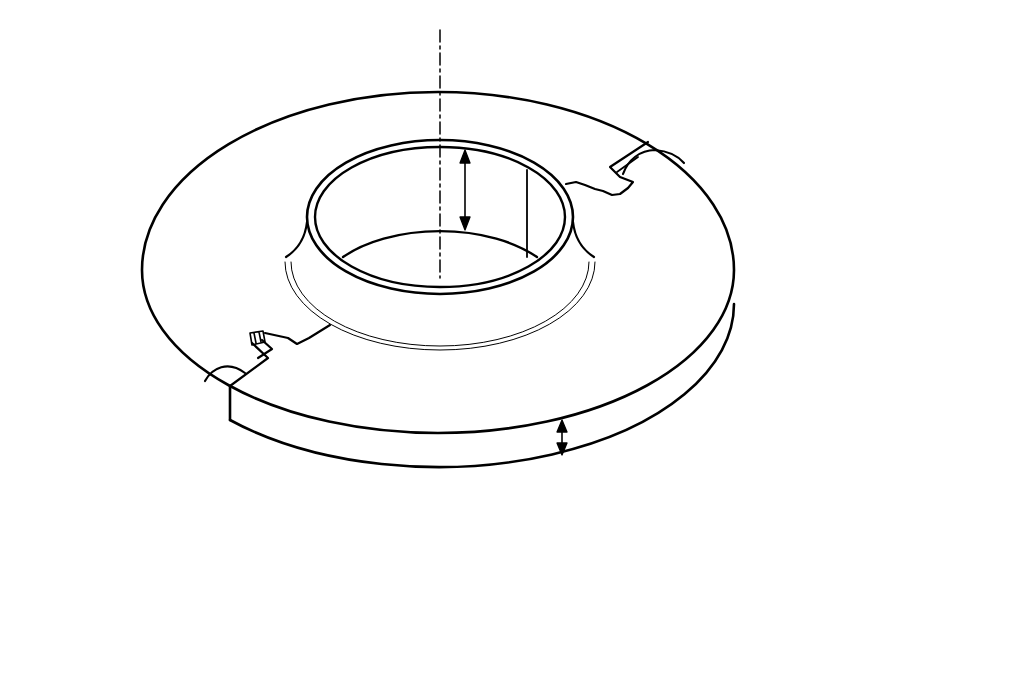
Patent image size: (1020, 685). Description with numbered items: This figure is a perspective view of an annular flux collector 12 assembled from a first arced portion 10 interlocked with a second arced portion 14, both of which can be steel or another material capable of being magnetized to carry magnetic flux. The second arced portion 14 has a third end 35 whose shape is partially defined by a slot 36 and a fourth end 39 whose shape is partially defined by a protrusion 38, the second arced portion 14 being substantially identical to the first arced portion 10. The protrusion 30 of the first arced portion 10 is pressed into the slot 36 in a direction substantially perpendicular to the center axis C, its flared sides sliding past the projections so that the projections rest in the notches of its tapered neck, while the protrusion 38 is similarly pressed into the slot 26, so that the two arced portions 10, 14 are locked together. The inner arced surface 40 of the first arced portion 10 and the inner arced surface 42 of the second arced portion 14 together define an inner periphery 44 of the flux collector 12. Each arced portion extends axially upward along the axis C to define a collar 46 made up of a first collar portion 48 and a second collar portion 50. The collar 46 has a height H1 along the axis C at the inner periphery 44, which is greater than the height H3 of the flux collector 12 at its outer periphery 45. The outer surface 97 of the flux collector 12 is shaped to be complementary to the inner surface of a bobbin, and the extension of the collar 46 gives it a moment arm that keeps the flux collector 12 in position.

The first arced portion 10 is at (268, 143).
The annular flux collector 12 is at (665, 72).
The second arced portion 14 is at (693, 237).
The slot 26 is at (256, 334).
The protrusion 30 is at (606, 184).
The third end 35 is at (627, 170).
The slot 36 is at (660, 157).
The protrusion 38 is at (257, 343).
The fourth end 39 is at (205, 381).
The inner arced surface 40 is at (380, 210).
The inner arced surface 42 is at (551, 222).
The inner periphery 44 is at (326, 205).
The outer periphery 45 is at (660, 395).
The collar 46 is at (303, 240).
The first collar portion 48 is at (303, 263).
The second collar portion 50 is at (367, 323).
The outer surface 97 is at (553, 277).
The height H1 is at (466, 190).
The height H3 is at (562, 437).
The center axis C is at (440, 33).